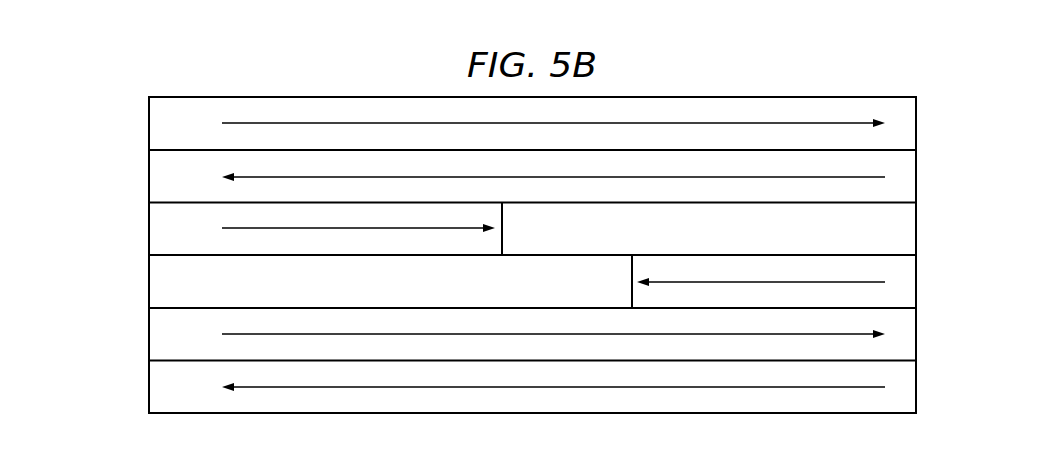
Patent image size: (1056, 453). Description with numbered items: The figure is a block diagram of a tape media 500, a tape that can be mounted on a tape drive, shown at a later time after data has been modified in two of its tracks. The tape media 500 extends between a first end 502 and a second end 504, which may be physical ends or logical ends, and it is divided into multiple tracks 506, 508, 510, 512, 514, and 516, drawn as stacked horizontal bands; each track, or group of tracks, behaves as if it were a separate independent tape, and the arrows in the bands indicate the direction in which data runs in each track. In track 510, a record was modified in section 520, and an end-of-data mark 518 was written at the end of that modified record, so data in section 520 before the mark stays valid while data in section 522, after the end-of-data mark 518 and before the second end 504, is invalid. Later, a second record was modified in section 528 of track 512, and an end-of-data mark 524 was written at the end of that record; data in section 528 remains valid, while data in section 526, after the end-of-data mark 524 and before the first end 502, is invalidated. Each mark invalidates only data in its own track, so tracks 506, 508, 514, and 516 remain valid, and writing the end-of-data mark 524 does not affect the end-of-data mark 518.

The tape media 500 is at (350, 64).
The first end 502 is at (118, 349).
The second end 504 is at (949, 352).
The track 506 is at (204, 133).
The track 508 is at (204, 186).
The track 510 is at (204, 239).
The track 512 is at (204, 292).
The track 514 is at (204, 344).
The track 516 is at (204, 397).
The end-of-data mark 518 is at (505, 218).
The section 520 is at (347, 245).
The section 522 is at (907, 230).
The end-of-data mark 524 is at (630, 290).
The section 526 is at (610, 268).
The section 528 is at (907, 288).